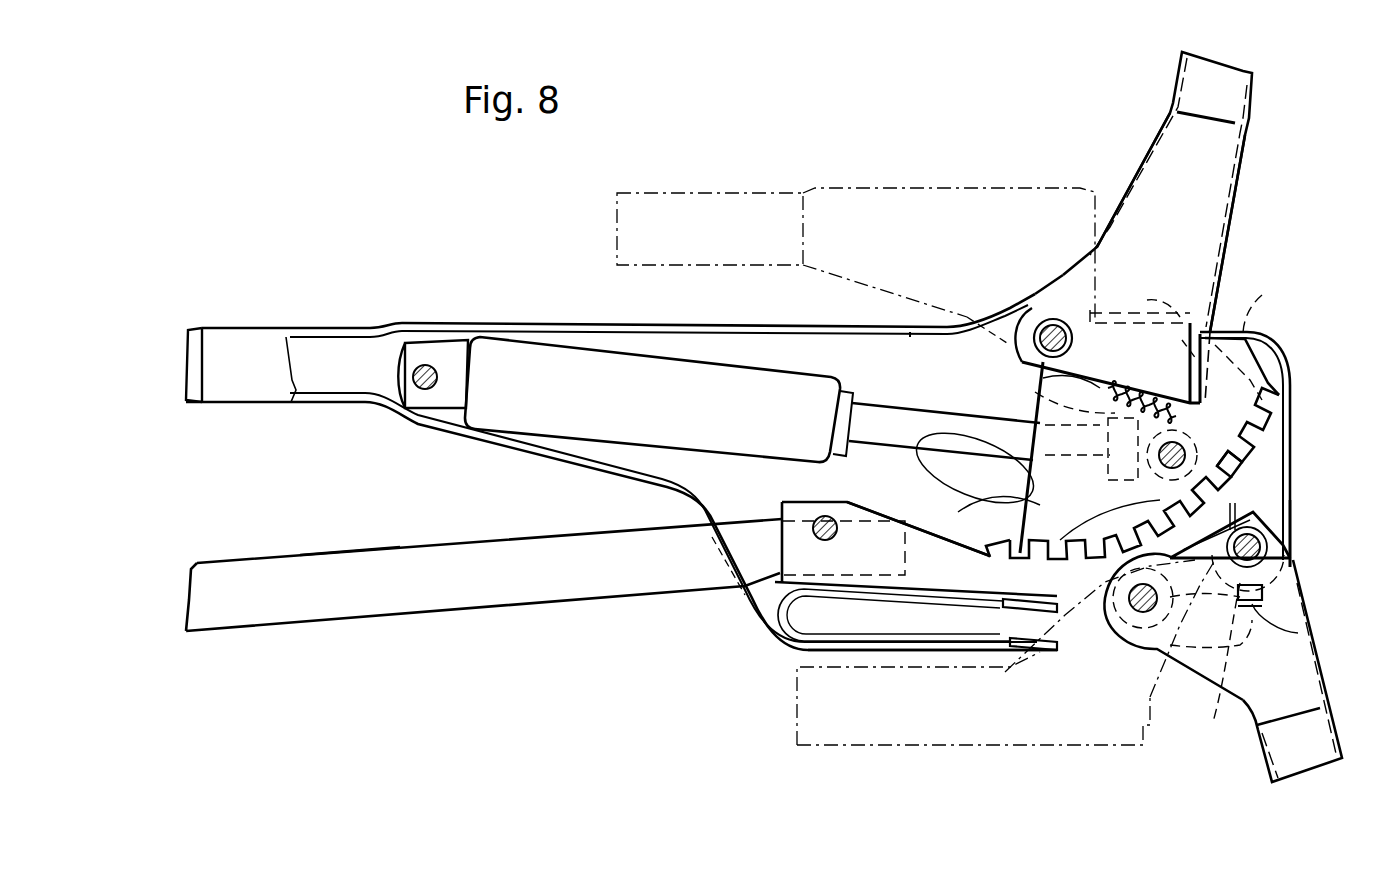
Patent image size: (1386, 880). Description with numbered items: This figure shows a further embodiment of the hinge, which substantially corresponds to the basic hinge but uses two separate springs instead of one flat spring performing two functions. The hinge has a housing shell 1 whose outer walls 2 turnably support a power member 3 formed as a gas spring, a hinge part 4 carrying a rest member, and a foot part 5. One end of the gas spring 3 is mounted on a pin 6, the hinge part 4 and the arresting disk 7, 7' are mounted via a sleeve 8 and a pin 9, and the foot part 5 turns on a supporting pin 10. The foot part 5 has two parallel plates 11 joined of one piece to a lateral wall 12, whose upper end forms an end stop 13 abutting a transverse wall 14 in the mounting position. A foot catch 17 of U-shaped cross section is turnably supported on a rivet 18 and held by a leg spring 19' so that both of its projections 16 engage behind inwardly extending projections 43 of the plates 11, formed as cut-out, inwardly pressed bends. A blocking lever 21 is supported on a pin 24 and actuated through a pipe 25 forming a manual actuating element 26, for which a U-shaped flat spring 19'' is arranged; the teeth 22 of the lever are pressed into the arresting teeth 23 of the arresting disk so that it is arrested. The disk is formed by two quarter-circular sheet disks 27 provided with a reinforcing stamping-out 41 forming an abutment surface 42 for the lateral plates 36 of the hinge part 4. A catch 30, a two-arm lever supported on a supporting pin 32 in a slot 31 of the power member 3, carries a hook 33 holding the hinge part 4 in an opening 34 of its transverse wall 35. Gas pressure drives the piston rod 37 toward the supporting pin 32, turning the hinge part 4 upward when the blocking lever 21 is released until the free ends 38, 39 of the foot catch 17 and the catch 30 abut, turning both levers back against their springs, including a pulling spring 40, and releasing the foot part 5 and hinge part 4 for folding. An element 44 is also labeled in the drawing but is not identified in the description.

The hinge shell 1 is at (738, 352).
The outer wall 2 is at (852, 356).
The power member 3 is at (576, 366).
The hinge part 4 is at (1208, 187).
The foot part 5 is at (1304, 678).
The pin 6 is at (438, 364).
The arresting disk 7 is at (1179, 447).
The plate 7' is at (1238, 372).
The sleeve 8 is at (1062, 320).
The pin 9 is at (1037, 330).
The supporting pin 10 is at (1128, 614).
The plates 11 is at (1207, 663).
The lateral wall 12 is at (1298, 628).
The end stop 13 is at (1270, 556).
The transverse wall 14 is at (1292, 522).
The projection 16 is at (1230, 690).
The foot catch 17 is at (1131, 650).
The rivet 18 is at (1285, 506).
The leg spring 19' is at (945, 604).
The U-shaped flat spring 19'' is at (891, 666).
The blocking lever 21 is at (920, 547).
The teeth 22 is at (992, 555).
The arresting teeth 23 is at (1058, 579).
The pin 24 is at (828, 516).
The pipe 25 is at (440, 562).
The manual actuating element 26 is at (343, 546).
The quarter circular sheet disks 27 is at (965, 506).
The catch 30 is at (1256, 337).
The slot 31 is at (1082, 491).
The supporting pin 32 is at (1152, 480).
The hook 33 is at (1252, 306).
The opening 34 is at (1178, 318).
The transverse wall 35 is at (1230, 240).
The lateral plates 36 is at (1150, 200).
The piston rod 37 is at (905, 424).
The free end 38 is at (1285, 468).
The free end 39 is at (1232, 468).
The pulling spring 40 is at (1036, 403).
The reinforcing stamping-out 41 is at (1043, 388).
The abutment surface 42 is at (1183, 398).
The projection 43 is at (1266, 597).
The cam 44 is at (915, 466).